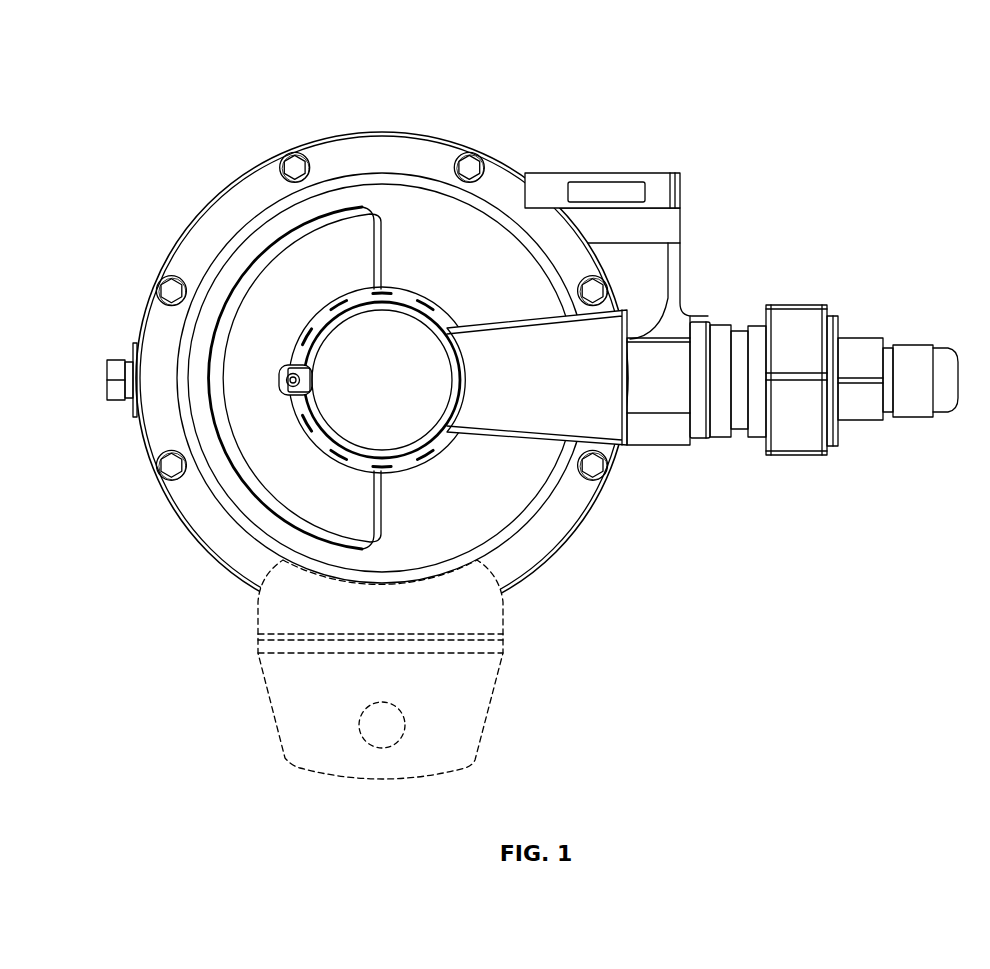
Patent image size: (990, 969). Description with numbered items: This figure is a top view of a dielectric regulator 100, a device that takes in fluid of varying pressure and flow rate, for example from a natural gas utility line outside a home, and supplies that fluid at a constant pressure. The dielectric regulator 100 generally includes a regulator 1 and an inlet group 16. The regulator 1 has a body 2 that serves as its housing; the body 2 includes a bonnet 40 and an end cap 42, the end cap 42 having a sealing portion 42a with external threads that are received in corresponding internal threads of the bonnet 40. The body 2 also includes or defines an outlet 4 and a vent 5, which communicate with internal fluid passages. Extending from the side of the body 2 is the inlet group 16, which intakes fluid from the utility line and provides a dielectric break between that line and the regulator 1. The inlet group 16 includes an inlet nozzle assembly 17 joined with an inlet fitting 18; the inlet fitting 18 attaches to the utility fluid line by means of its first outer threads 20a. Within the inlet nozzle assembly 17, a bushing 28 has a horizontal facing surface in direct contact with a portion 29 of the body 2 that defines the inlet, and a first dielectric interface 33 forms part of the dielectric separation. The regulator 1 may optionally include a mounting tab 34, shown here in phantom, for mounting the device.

The dielectric regulator 100 is at (160, 155).
The regulator 1 is at (242, 122).
The body 2 is at (341, 131).
The bonnet 40 is at (386, 144).
The end cap 42 is at (400, 298).
The sealing portion 42a is at (405, 333).
The outlet 4 is at (655, 172).
The vent 5 is at (632, 377).
The portion of body defining inlet 29 is at (652, 437).
The bushing 28 is at (698, 428).
The first dielectric interface 33 is at (758, 415).
The inlet nozzle assembly 17 is at (738, 325).
The inlet group 16 is at (823, 497).
The inlet fitting 18 is at (905, 420).
The first outer threads 20a is at (921, 418).
The mounting tab 34 is at (267, 692).